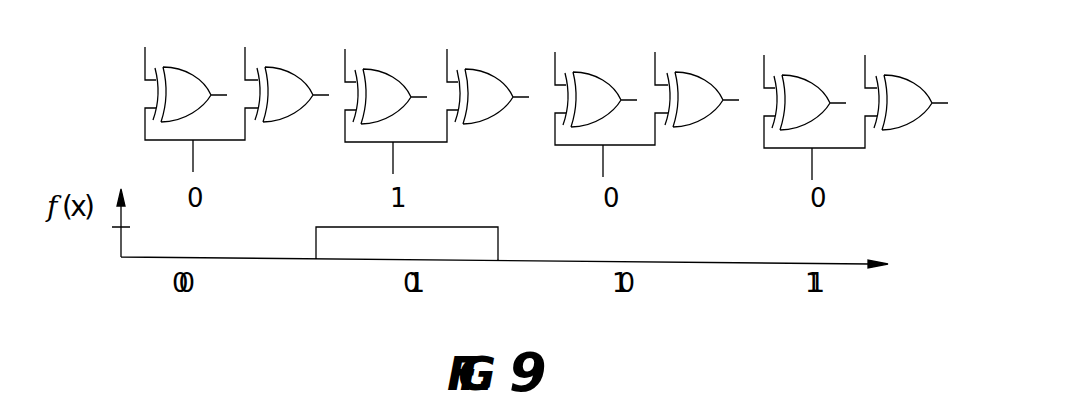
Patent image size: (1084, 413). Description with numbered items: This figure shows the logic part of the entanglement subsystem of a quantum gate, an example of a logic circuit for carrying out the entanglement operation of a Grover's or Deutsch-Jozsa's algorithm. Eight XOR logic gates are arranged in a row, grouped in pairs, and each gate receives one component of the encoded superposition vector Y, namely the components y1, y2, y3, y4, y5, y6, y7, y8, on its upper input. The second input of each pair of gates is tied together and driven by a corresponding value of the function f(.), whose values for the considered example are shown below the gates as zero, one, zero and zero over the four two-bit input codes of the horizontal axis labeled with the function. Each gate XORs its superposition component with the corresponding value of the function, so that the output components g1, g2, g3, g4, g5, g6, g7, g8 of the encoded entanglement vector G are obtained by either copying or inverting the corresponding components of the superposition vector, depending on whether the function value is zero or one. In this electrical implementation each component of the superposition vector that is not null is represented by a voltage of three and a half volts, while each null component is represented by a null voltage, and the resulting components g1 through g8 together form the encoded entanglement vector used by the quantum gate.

The component of the encoded superposition vector y1 is at (146, 40).
The component of the encoded superposition vector y2 is at (246, 40).
The component of the encoded superposition vector y3 is at (346, 41).
The component of the encoded superposition vector y4 is at (448, 41).
The component of the encoded superposition vector y5 is at (556, 42).
The component of the encoded superposition vector y6 is at (656, 42).
The component of the encoded superposition vector y7 is at (765, 45).
The component of the encoded superposition vector y8 is at (866, 45).
The component of the encoded entanglement vector g1 is at (193, 88).
The component of the encoded entanglement vector g2 is at (295, 88).
The component of the encoded entanglement vector g3 is at (393, 90).
The component of the encoded entanglement vector g4 is at (495, 90).
The component of the encoded entanglement vector g5 is at (603, 93).
The component of the encoded entanglement vector g6 is at (705, 93).
The component of the encoded entanglement vector g7 is at (812, 96).
The component of the encoded entanglement vector g8 is at (914, 96).